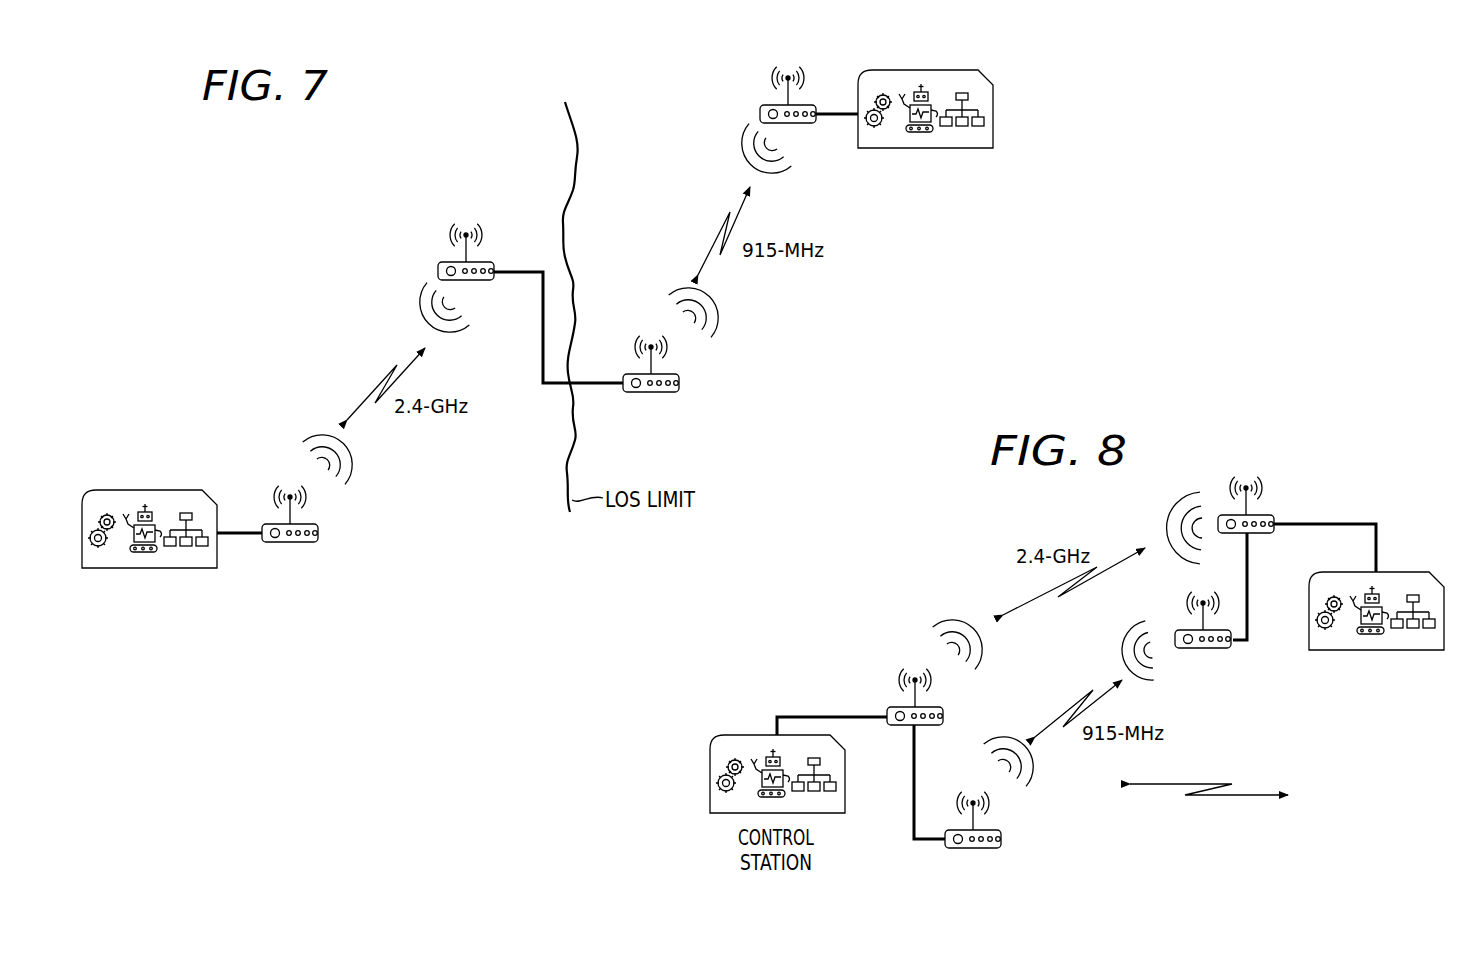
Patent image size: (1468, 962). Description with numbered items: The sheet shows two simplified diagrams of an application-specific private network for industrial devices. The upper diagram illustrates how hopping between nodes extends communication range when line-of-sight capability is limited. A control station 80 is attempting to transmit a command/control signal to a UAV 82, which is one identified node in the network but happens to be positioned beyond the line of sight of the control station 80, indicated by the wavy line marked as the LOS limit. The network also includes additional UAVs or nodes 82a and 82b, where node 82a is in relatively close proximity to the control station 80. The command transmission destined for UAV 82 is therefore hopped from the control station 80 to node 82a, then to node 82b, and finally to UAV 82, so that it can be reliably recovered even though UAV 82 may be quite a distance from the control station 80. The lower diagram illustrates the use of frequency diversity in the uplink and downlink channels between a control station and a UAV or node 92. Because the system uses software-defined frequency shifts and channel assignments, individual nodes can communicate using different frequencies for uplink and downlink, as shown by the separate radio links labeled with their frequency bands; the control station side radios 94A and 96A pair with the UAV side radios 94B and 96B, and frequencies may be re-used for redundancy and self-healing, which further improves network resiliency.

In FIG. 7, the control station 80 is at (135, 490).
In FIG. 7, the network node 82a is at (438, 268).
In FIG. 7, the network node 82b is at (679, 384).
In FIG. 7, the UAV 82 is at (925, 70).
In FIG. 8, the 2.4-GHz radio of control station 94A is at (887, 712).
In FIG. 8, the 915-MHz radio of control station 96A is at (965, 848).
In FIG. 8, the 2.4-GHz radio of UAV 94B is at (1275, 518).
In FIG. 8, the 915-MHz radio of UAV 96B is at (1208, 648).
In FIG. 8, the UAV 92 is at (1405, 572).